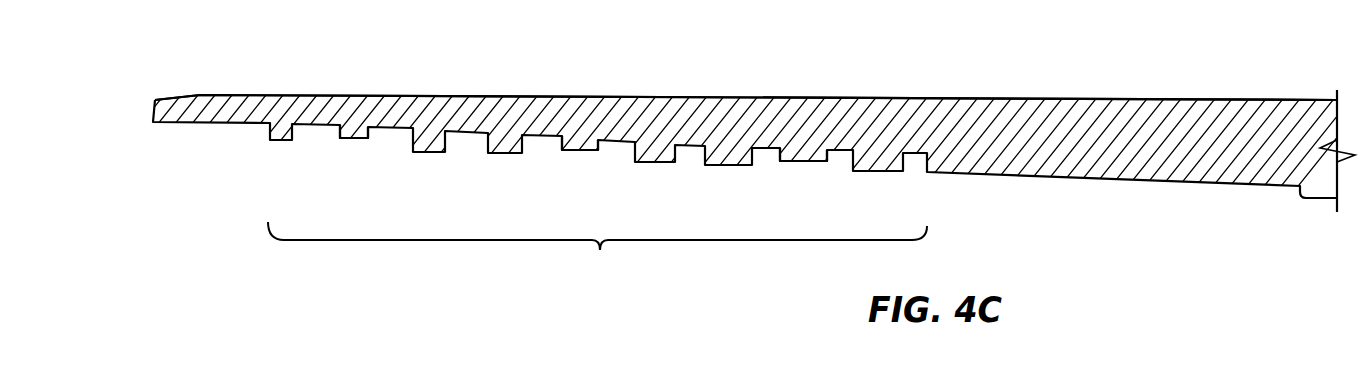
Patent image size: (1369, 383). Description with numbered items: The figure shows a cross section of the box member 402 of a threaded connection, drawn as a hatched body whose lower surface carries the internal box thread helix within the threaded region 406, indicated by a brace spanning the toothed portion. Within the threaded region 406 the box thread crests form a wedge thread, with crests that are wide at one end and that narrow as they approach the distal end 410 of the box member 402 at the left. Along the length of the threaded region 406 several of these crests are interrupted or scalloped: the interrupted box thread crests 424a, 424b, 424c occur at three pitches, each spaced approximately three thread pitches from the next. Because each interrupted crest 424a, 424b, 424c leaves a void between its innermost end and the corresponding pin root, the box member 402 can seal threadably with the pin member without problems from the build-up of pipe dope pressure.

The box member 402 is at (1259, 155).
The distal end of box member 410 is at (206, 95).
The interrupted box thread crest 424a is at (578, 150).
The interrupted box thread crest 424b is at (352, 140).
The interrupted box thread crest 424c is at (805, 163).
The threaded region 406 is at (597, 258).